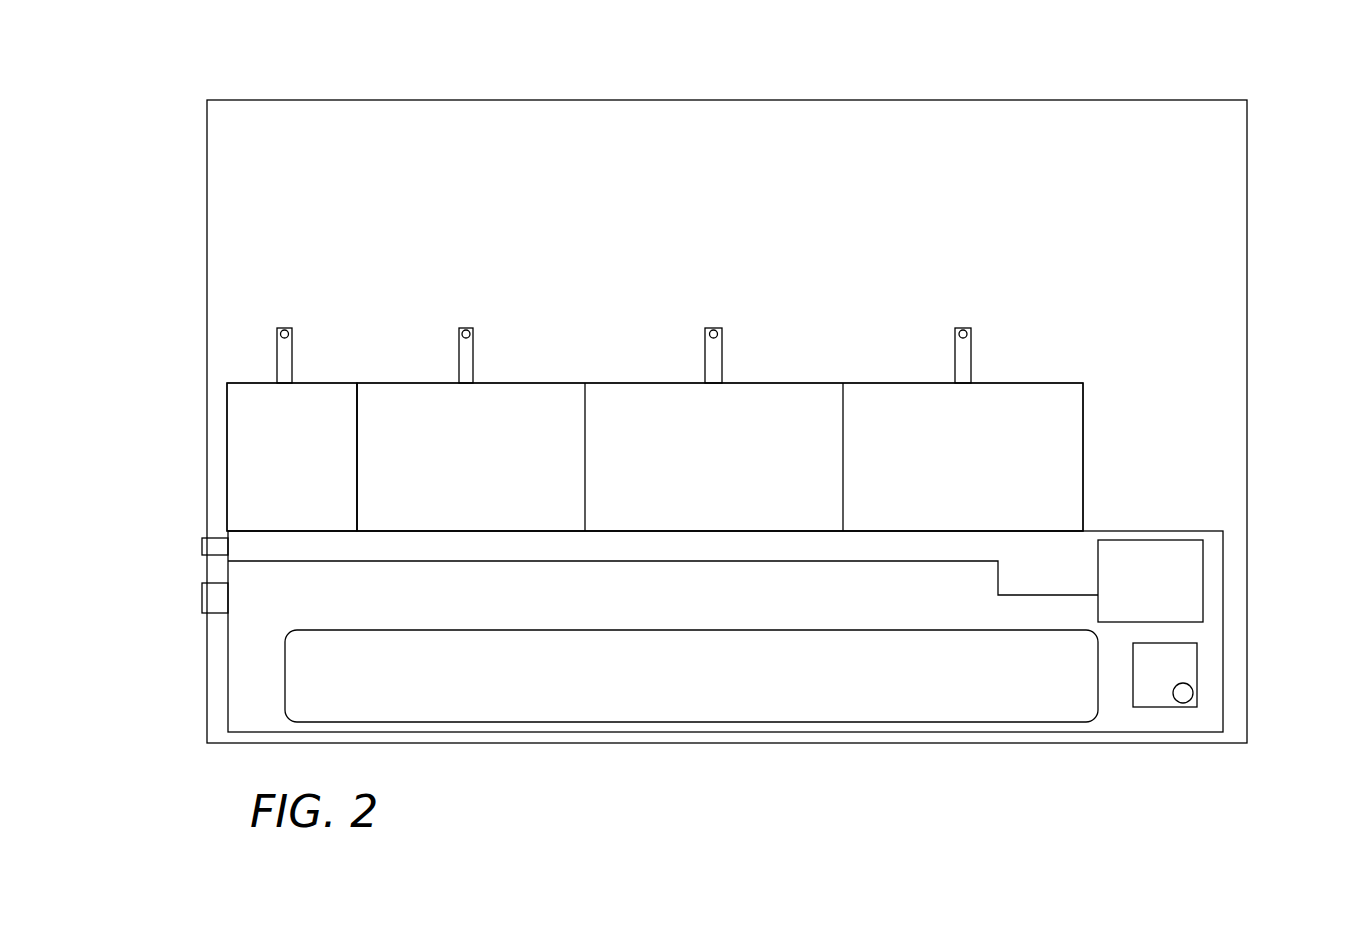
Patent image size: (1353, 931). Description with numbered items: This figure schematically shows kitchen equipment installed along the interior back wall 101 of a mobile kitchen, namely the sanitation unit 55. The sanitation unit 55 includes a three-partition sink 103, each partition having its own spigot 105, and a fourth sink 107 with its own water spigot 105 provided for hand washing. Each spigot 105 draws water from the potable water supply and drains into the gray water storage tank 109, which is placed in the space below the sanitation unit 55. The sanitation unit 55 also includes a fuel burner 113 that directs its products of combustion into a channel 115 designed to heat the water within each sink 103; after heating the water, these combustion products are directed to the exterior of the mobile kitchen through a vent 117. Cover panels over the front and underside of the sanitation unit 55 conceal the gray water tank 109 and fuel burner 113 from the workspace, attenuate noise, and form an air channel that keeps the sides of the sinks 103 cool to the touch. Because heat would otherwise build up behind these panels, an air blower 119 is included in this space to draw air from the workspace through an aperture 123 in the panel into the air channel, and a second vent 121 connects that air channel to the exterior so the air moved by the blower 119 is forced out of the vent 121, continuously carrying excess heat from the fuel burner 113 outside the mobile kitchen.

The interior back wall 101 is at (897, 107).
The sanitation unit 55 is at (803, 383).
The sink 103 is at (530, 464).
The spigot 105 is at (292, 357).
The fourth sink 107 is at (320, 464).
The gray water storage tank 109 is at (767, 712).
The fuel burner 113 is at (1203, 563).
The channel 115 is at (940, 563).
The vent 117 is at (202, 545).
The air blower 119 is at (1197, 665).
The second vent 121 is at (202, 598).
The aperture 123 is at (1183, 703).